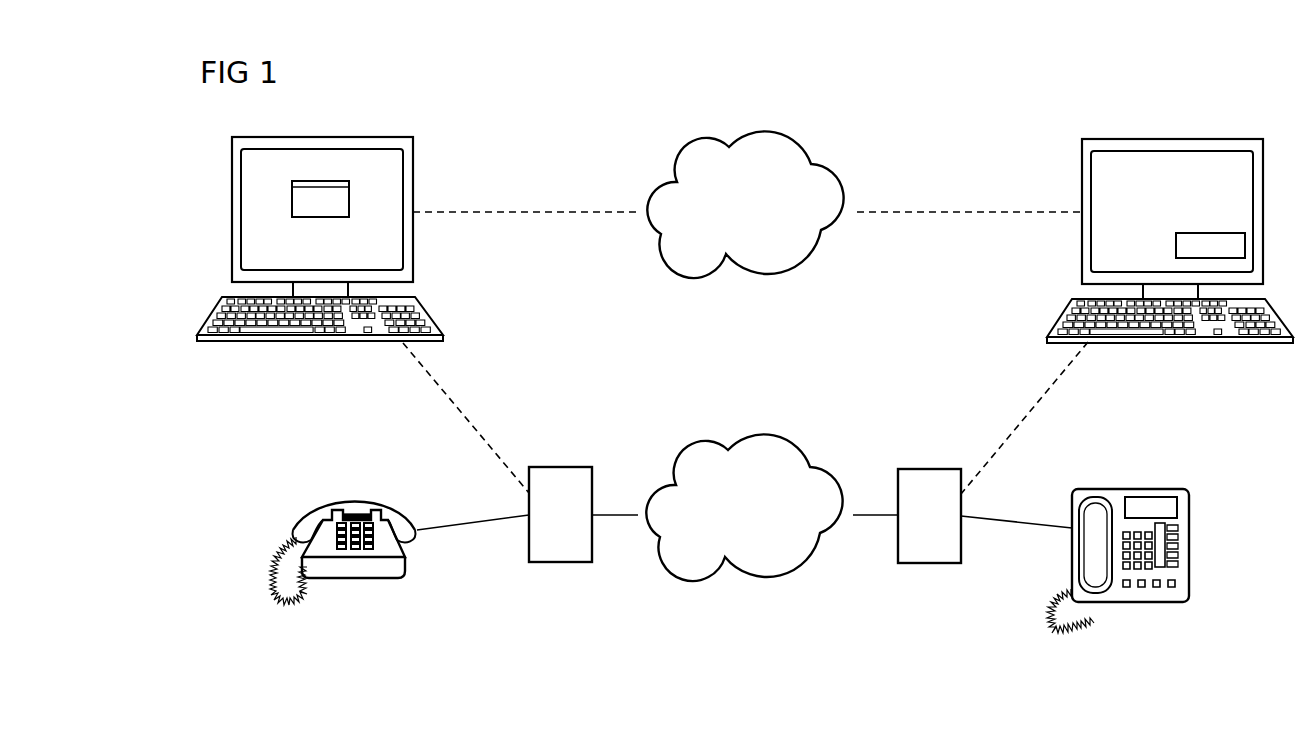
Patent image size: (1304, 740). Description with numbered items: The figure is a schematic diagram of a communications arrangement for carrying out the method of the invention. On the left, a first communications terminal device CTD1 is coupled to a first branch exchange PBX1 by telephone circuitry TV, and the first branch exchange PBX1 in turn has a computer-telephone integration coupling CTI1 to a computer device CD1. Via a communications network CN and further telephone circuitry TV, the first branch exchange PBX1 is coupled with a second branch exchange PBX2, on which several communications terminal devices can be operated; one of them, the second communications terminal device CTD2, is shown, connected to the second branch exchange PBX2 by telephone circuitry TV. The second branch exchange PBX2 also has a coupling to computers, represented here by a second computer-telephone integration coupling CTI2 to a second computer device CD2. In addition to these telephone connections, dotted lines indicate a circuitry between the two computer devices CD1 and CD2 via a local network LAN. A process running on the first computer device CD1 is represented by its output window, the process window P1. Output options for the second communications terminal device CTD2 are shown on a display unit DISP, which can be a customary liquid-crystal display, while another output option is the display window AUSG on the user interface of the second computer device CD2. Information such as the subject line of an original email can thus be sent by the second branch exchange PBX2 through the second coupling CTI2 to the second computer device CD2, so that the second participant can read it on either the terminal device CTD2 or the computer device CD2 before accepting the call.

The first computer device CD1 is at (360, 137).
The process window P1 is at (320, 211).
The local network LAN is at (765, 132).
The second computer device CD2 is at (1173, 139).
The display window AUSG is at (1199, 233).
The computer-telephone integration coupling CTI1 is at (455, 408).
The second computer-telephone integration coupling CTI2 is at (1033, 410).
The first branch exchange PBX1 is at (560, 467).
The second branch exchange PBX2 is at (930, 469).
The communications network CN is at (765, 435).
The subscriber connection line TV is at (474, 523).
The first communications terminal device CTD1 is at (352, 578).
The second communications terminal device CTD2 is at (1130, 602).
The display unit DISP is at (1157, 497).